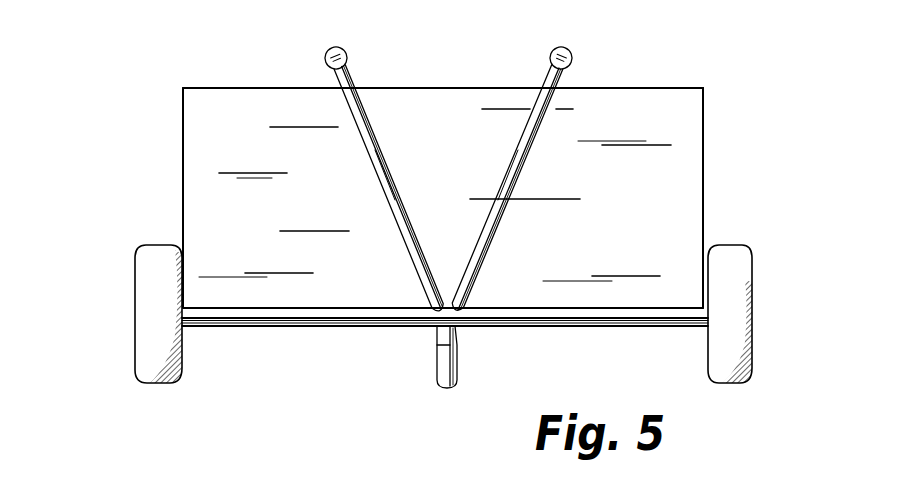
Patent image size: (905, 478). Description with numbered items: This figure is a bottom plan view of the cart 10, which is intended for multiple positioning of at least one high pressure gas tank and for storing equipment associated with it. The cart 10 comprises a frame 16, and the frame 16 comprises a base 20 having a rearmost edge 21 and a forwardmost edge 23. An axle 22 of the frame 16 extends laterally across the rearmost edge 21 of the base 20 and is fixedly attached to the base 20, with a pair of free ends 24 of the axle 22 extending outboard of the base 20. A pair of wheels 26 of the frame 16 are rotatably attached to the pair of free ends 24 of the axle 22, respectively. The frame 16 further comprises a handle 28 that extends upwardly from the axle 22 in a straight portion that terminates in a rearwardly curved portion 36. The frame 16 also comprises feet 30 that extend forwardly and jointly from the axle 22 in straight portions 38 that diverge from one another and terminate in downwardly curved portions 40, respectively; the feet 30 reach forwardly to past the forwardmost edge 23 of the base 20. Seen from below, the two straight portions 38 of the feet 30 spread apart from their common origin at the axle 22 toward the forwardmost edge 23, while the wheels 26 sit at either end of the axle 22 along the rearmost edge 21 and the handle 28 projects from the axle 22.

The cart 10 is at (114, 93).
The frame 16 is at (182, 175).
The base 20 is at (218, 102).
The forwardmost edge 23 is at (633, 88).
The feet 30 is at (539, 80).
The downwardly curved portions 40 is at (449, 179).
The straight portions 38 is at (505, 172).
The rearmost edge 21 is at (586, 326).
The axle 22 is at (256, 322).
The free ends 24 is at (136, 330).
The wheels 26 is at (134, 347).
The handle 28 is at (432, 337).
The rearwardly curved portion 36 is at (456, 330).